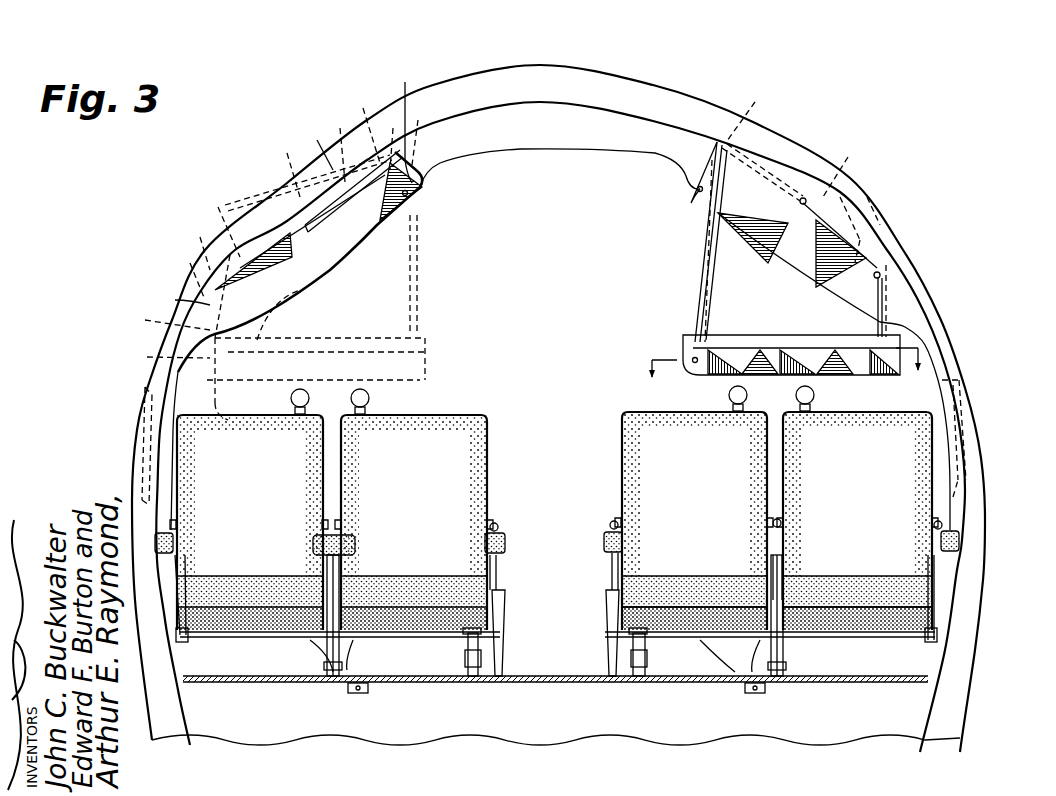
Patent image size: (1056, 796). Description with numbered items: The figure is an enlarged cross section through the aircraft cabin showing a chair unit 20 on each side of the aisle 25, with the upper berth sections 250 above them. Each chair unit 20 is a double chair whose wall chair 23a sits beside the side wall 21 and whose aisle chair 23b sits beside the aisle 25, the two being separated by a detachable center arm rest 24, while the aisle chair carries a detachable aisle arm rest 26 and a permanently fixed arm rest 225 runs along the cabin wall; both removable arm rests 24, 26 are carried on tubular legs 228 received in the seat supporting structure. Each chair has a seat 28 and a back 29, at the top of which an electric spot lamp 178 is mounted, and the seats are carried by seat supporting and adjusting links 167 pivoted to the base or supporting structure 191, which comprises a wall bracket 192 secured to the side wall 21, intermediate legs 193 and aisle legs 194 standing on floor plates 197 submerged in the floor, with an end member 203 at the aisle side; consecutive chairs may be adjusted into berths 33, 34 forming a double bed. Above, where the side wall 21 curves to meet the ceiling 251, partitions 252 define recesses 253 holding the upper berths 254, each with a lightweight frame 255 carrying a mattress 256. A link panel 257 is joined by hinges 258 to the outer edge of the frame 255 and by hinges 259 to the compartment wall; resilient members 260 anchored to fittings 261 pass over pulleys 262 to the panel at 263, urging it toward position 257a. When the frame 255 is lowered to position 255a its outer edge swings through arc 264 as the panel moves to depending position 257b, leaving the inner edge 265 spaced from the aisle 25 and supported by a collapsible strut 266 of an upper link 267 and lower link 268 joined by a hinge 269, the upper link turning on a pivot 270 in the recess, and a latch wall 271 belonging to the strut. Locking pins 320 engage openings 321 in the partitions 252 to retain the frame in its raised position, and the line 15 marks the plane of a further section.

The section line 15- 15 is at (776, 368).
The chair unit 20 is at (175, 483).
The side wall 21 is at (155, 378).
The wall chair 23a is at (238, 503).
The aisle chair 23b is at (404, 503).
The center arm rest 24 is at (357, 541).
The aisle 25 is at (562, 545).
The aisle arm rest 26 is at (503, 538).
The seat 28 is at (250, 590).
The back 29 is at (175, 440).
The berth 33 is at (838, 600).
The berth 34 is at (672, 600).
The seat supporting and adjusting link 167 is at (497, 520).
The electric spot lamp 178 is at (351, 396).
The base or supporting structure 191 is at (245, 640).
The wall bracket 192 is at (167, 643).
The intermediate leg 193 is at (335, 670).
The aisle leg 194 is at (470, 660).
The floor plate 197 is at (488, 680).
The end member 203 is at (602, 627).
The arm rest 225 is at (157, 530).
The tubular leg 228 is at (500, 565).
The upper berth section 250 is at (382, 238).
The ceiling 251 is at (583, 76).
The partition 252 is at (392, 217).
The recess 253 is at (923, 240).
The upper berth 254 is at (322, 243).
The frame 255 is at (300, 275).
The lowered frame position 255a is at (340, 350).
The mattress 256 is at (770, 342).
The link member or panel 257 is at (884, 350).
The raised link panel position 257a is at (185, 302).
The depending link panel position 257b is at (156, 355).
The hinge 258 is at (212, 380).
The hinge 259 is at (952, 260).
The resilient member 260 is at (810, 132).
The fitting 261 is at (753, 111).
The pulley 262 is at (925, 220).
The connection point 263 is at (876, 333).
The arc 264 is at (257, 340).
The inner edge 265 is at (428, 370).
The collapsible strut 266 is at (700, 272).
The upper link 267 is at (702, 230).
The lower link 268 is at (695, 302).
The hinge 269 is at (702, 250).
The pivot 270 is at (707, 143).
The latch keeper 271 is at (680, 332).
The locking pin 320 is at (425, 380).
The opening 321 is at (409, 190).